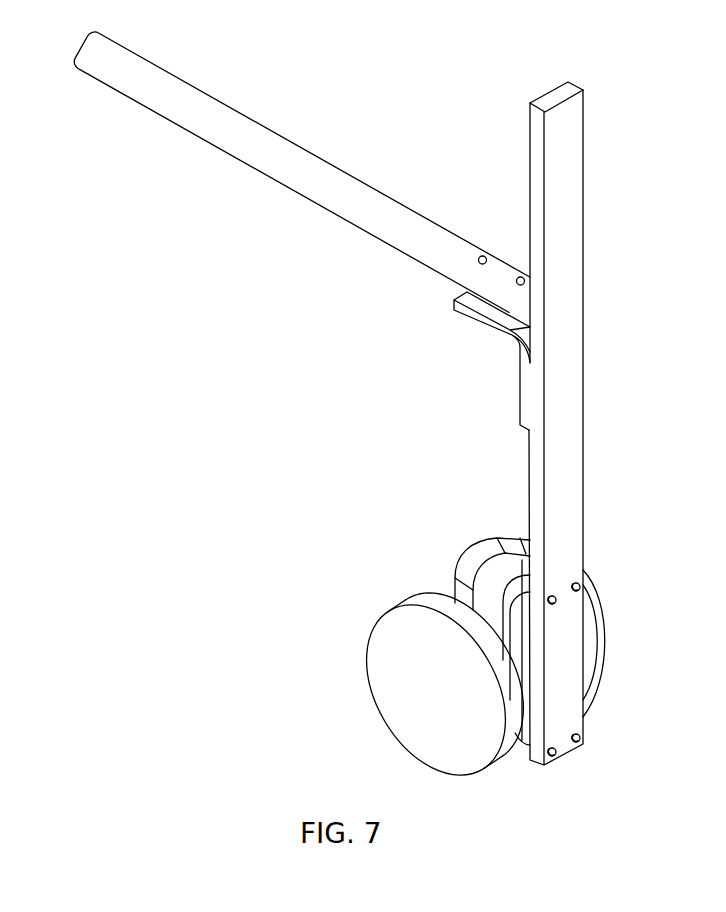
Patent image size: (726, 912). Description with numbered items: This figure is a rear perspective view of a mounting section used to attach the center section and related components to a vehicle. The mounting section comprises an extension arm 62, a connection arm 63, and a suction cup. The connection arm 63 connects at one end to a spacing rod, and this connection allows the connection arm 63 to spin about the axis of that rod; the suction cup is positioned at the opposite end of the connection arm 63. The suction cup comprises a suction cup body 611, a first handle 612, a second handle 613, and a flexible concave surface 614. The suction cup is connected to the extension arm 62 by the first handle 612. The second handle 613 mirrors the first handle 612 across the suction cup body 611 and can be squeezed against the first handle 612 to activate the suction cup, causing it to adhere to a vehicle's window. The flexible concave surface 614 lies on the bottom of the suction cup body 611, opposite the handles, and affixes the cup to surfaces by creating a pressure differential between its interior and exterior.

The extension arm 62 is at (567, 213).
The connection arm 63 is at (310, 182).
The suction cup body 611 is at (425, 670).
The first handle 612 is at (595, 594).
The second handle 613 is at (493, 547).
The flexible concave surface 614 is at (418, 690).